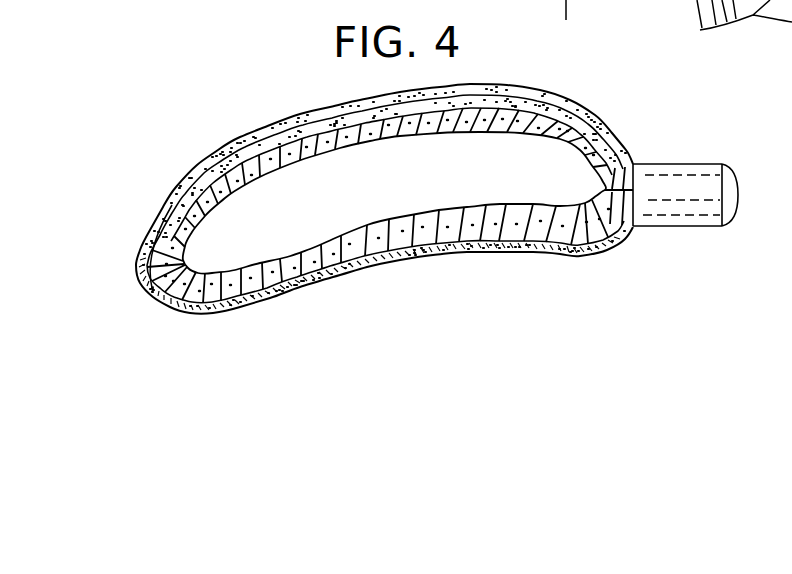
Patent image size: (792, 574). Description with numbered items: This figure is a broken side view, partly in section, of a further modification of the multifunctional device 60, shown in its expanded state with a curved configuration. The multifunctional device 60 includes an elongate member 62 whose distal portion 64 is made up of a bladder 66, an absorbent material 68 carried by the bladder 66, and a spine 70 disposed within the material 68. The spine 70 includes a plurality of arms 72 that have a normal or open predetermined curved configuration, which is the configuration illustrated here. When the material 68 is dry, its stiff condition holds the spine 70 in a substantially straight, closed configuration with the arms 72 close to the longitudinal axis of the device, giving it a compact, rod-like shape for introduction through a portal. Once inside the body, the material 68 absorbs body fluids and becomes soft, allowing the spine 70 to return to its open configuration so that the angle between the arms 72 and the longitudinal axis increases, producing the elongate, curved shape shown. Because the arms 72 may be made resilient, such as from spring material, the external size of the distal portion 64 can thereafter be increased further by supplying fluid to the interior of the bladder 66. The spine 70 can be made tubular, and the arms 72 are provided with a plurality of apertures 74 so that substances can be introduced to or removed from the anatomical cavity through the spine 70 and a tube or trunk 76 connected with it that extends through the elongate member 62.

The multifunctional device 60 is at (612, 98).
The elongate member 62 is at (683, 163).
The distal portion 64 is at (300, 118).
The bladder 66 is at (427, 252).
The absorbent material 68 is at (573, 257).
The spine 70 is at (500, 100).
The arms 72 is at (233, 148).
The apertures 74 is at (178, 213).
The tube or trunk 76 is at (697, 217).